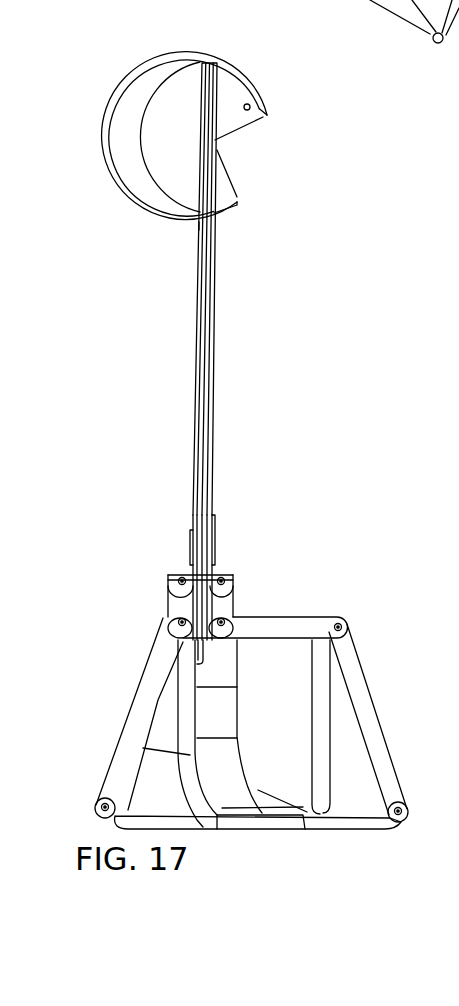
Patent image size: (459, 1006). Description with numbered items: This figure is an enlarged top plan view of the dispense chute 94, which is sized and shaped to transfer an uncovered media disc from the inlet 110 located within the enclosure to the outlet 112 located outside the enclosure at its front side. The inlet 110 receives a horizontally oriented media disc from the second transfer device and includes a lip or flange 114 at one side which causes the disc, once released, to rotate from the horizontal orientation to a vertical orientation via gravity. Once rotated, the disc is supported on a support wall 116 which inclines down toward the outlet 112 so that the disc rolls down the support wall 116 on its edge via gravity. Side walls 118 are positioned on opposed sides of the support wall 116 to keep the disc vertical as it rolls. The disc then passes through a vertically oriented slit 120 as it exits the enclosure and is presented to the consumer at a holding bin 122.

The dispense chute 94 is at (320, 402).
The inlet 110 is at (155, 58).
The outlet 112 is at (257, 830).
The lip or flange 114 is at (238, 122).
The support wall 116 is at (207, 397).
The side walls 118 is at (193, 420).
The vertically oriented slit 120 is at (197, 680).
The holding bin 122 is at (265, 705).